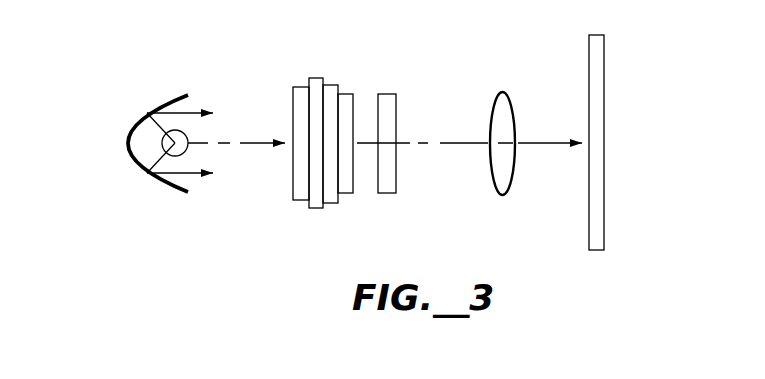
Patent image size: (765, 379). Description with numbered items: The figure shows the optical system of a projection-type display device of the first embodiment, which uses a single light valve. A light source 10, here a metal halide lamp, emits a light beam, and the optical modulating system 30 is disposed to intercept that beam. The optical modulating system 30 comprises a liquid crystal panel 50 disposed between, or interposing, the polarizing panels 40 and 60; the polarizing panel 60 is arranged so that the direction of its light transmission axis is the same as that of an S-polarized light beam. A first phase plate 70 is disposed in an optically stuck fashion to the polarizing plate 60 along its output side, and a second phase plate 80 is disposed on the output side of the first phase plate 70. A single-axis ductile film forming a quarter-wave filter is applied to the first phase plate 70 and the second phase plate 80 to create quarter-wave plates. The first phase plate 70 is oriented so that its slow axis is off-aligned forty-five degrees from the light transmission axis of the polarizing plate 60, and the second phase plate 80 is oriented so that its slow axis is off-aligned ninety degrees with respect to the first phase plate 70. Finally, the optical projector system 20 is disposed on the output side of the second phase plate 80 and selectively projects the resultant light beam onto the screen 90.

The light source 10 is at (137, 123).
The optical projector system 20 is at (510, 108).
The optical modulating system 30 is at (322, 150).
The polarizing panel 40 is at (300, 188).
The liquid crystal cell 50 is at (313, 158).
The polarizing panel 60 is at (332, 92).
The first phase plate 70 is at (350, 102).
The second phase plate 80 is at (388, 117).
The screen 90 is at (603, 77).